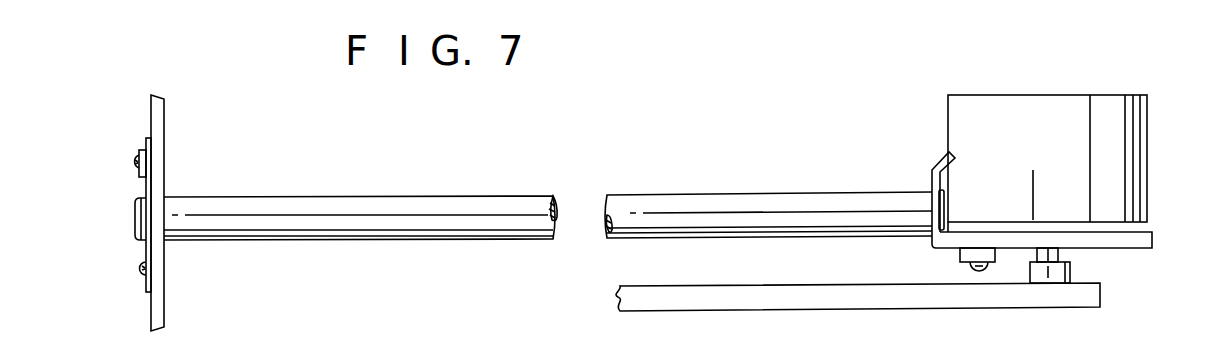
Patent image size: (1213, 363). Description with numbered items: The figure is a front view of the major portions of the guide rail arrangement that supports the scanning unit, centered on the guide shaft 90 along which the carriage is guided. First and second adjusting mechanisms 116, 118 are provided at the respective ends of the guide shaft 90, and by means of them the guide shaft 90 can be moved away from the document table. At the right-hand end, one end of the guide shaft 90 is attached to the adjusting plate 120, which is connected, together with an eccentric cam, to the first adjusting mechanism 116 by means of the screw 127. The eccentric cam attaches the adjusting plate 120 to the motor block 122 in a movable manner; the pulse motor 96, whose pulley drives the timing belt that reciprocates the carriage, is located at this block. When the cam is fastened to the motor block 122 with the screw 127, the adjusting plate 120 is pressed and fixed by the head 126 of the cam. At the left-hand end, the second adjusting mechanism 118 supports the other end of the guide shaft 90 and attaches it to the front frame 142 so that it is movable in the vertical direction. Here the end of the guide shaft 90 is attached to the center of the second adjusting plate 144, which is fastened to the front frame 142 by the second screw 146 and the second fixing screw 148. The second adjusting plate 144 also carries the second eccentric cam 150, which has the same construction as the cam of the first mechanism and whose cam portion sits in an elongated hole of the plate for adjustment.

The guide shaft 90 is at (383, 196).
The pulse motor 96 is at (1057, 108).
The first adjusting mechanism 116 is at (942, 257).
The second adjusting mechanism 118 is at (131, 248).
The adjusting plate 120 is at (931, 185).
The motor block 122 is at (1153, 242).
The head 126 is at (966, 266).
The screw 127 is at (998, 285).
The front frame 142 is at (166, 101).
The second adjusting plate 144 is at (147, 140).
The second screw 146 is at (136, 160).
The second fixing screw 148 is at (144, 274).
The second eccentric cam 150 is at (139, 174).